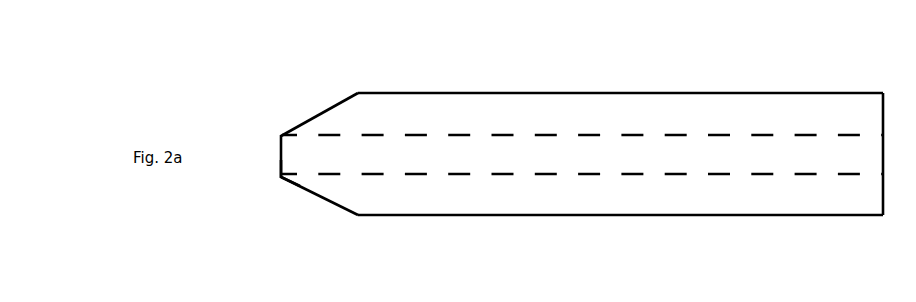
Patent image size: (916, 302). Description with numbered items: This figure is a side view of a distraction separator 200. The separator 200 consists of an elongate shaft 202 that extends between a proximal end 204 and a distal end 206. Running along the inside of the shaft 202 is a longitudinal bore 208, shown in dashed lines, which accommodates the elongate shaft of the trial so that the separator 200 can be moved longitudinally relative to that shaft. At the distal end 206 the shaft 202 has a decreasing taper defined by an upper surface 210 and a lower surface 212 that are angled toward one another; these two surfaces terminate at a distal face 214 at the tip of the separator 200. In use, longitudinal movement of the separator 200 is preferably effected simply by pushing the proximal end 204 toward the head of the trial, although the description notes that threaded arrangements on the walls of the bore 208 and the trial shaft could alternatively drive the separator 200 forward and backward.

The distraction separator 200 is at (510, 67).
The elongate shaft 202 is at (627, 84).
The proximal end 204 is at (874, 77).
The distal end 206 is at (273, 203).
The longitudinal bore 208 is at (554, 161).
The upper surface 210 is at (316, 105).
The lower surface 212 is at (322, 211).
The distal face 214 is at (271, 146).